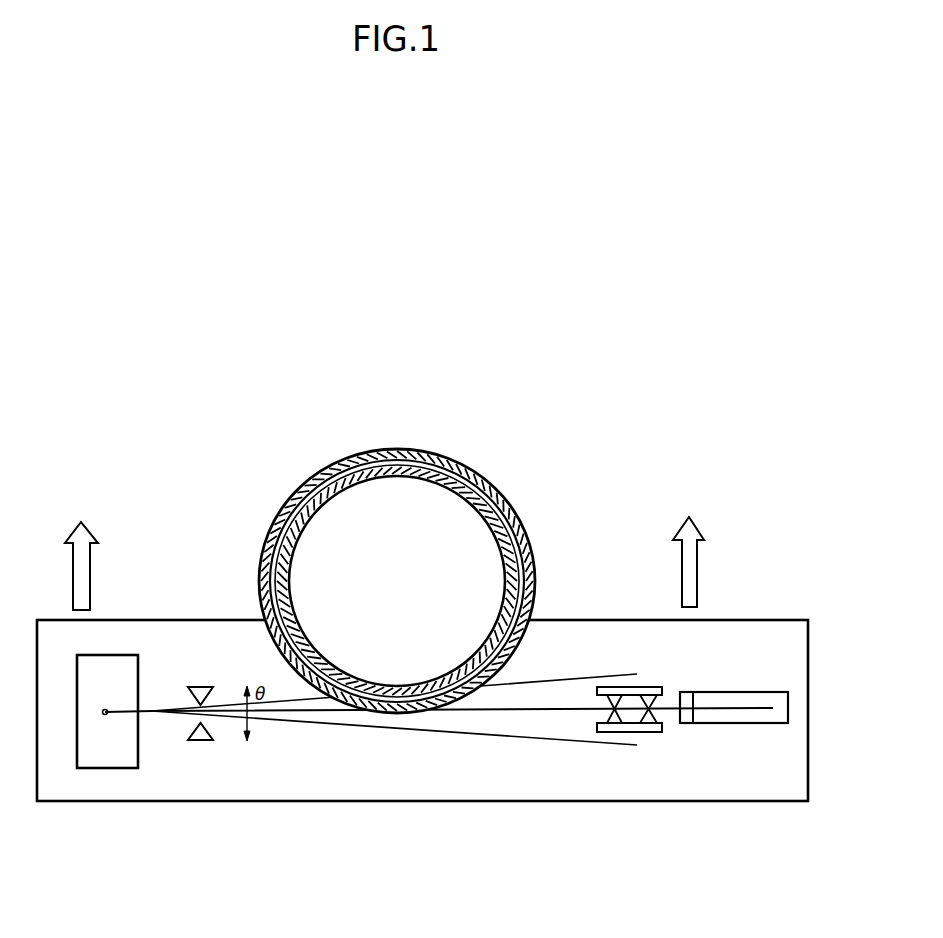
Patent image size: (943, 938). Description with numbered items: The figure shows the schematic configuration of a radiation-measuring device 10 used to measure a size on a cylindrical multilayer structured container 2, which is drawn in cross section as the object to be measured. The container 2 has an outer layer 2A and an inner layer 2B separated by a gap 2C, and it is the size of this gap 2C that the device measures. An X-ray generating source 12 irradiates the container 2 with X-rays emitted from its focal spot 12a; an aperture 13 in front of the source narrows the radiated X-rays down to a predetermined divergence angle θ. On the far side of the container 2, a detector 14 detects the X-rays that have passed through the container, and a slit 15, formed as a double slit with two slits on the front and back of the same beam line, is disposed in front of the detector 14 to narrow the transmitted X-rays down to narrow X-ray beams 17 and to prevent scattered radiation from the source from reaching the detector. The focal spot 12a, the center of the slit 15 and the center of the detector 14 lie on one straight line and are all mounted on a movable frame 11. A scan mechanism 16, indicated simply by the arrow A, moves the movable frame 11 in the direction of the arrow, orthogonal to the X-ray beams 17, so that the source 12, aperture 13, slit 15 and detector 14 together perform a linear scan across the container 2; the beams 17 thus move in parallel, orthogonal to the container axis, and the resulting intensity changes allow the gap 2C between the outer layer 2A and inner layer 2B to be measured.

The cylindrical multilayer structured container 2 is at (433, 556).
The outer layer 2A is at (510, 505).
The gap 2C is at (522, 525).
The inner layer 2B is at (532, 553).
The radiation-measuring device 10 is at (422, 769).
The movable frame 11 is at (355, 801).
The X-ray generating source 12 is at (105, 761).
The focal spot 12a is at (105, 715).
The aperture 13 is at (200, 741).
The detector 14 is at (730, 723).
The slit 15 is at (630, 732).
The scan mechanism 16 is at (90, 579).
The X-ray beams 17 is at (520, 710).